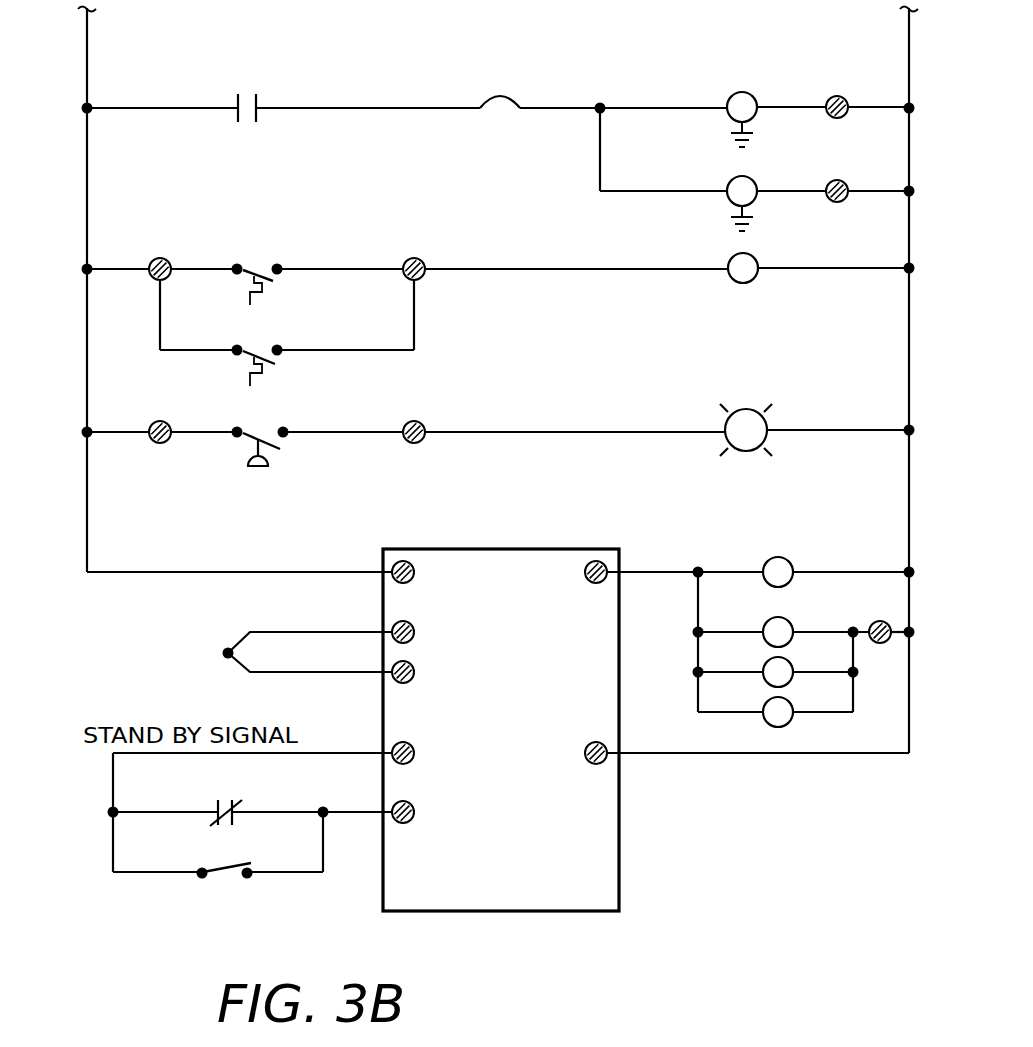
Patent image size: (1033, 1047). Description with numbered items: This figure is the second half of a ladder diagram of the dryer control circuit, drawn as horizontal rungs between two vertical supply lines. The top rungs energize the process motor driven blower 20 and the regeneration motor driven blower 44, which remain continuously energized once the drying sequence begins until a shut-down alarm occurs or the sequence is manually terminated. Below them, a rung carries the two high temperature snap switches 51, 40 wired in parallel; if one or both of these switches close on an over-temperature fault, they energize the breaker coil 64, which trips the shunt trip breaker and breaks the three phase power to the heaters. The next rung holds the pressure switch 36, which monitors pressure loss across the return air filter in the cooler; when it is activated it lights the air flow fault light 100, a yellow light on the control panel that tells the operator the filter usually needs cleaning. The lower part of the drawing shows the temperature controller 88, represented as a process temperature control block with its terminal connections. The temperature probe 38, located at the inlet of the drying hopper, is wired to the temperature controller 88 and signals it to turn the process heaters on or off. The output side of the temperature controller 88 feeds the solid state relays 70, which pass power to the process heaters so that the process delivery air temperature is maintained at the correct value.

The process motor driven blower 20 is at (738, 96).
The regeneration motor driven blower 44 is at (738, 182).
The breaker coil 64 is at (738, 262).
The air flow fault light 100 is at (735, 422).
The high temperature snap switch 51 is at (258, 262).
The high temperature snap switch 40 is at (237, 345).
The pressure switch 36 is at (244, 438).
The temperature probe 38 is at (226, 650).
The solid state relays 70 is at (773, 620).
The temperature controller 88 is at (481, 808).